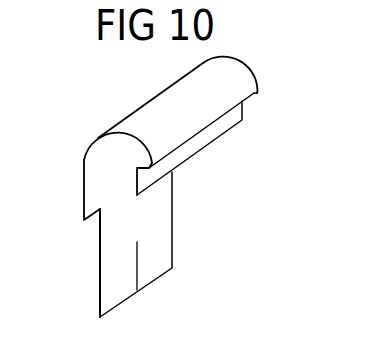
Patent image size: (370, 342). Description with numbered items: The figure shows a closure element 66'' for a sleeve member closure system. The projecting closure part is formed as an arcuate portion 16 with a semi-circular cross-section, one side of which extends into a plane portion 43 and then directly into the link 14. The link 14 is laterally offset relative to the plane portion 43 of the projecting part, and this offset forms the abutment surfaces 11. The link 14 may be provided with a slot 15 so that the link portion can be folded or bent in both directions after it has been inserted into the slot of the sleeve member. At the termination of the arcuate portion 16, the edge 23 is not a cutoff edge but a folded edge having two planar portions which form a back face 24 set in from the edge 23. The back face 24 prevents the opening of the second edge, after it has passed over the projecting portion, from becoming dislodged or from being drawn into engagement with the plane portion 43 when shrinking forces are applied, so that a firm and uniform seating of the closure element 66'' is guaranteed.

The closure element 66'' is at (149, 99).
The arcuate portion 16 is at (257, 85).
The edge 23 is at (250, 98).
The back face 24 is at (243, 116).
The plane portion 43 is at (90, 188).
The abutment surfaces 11 is at (98, 213).
The link 14 is at (165, 250).
The slot 15 is at (138, 276).